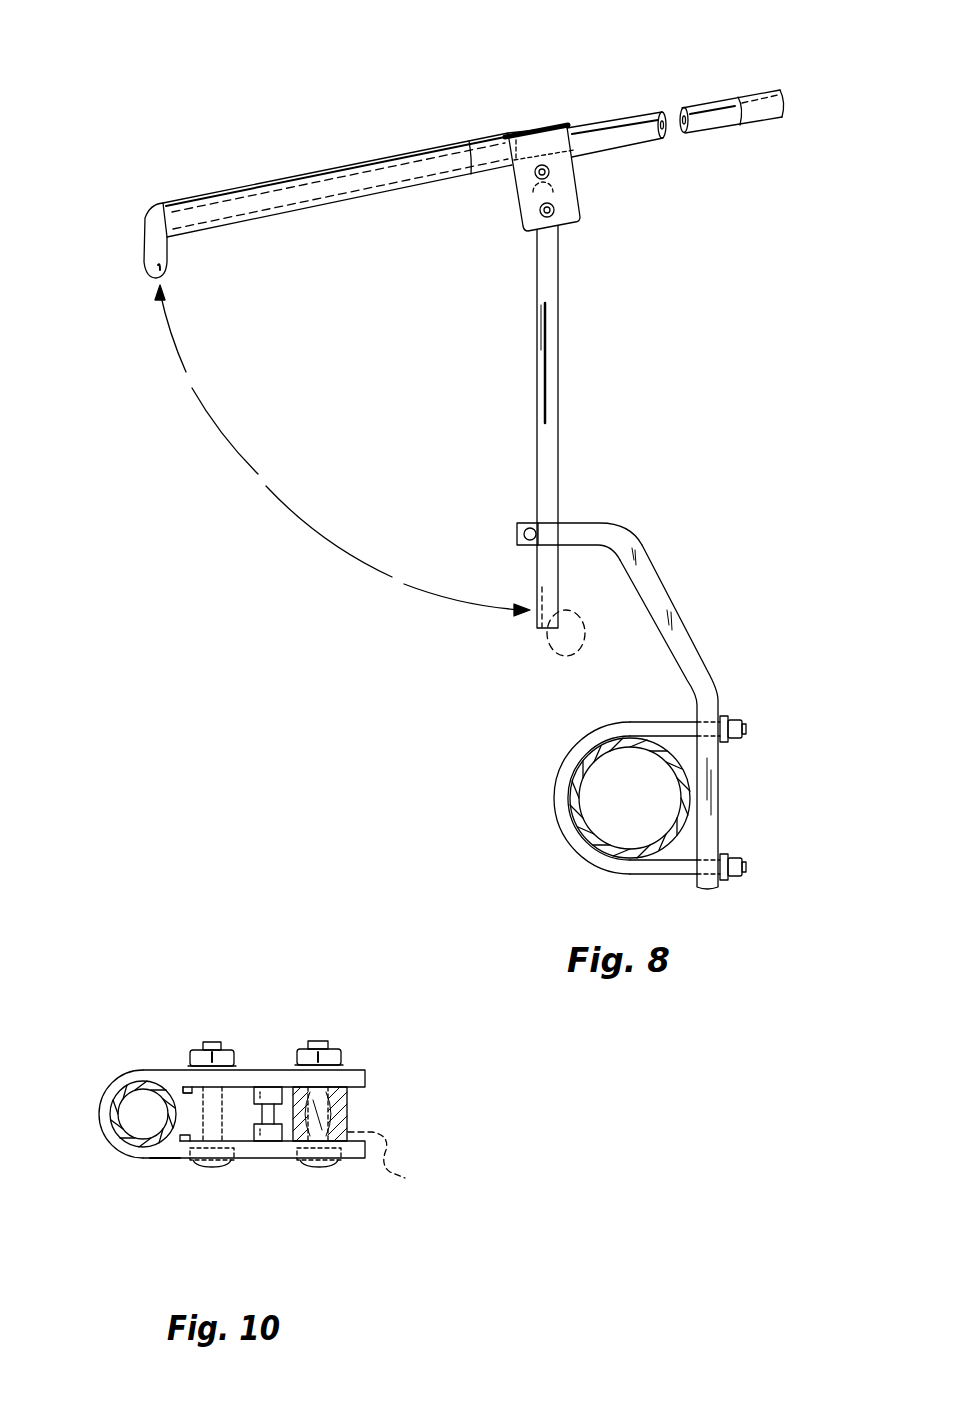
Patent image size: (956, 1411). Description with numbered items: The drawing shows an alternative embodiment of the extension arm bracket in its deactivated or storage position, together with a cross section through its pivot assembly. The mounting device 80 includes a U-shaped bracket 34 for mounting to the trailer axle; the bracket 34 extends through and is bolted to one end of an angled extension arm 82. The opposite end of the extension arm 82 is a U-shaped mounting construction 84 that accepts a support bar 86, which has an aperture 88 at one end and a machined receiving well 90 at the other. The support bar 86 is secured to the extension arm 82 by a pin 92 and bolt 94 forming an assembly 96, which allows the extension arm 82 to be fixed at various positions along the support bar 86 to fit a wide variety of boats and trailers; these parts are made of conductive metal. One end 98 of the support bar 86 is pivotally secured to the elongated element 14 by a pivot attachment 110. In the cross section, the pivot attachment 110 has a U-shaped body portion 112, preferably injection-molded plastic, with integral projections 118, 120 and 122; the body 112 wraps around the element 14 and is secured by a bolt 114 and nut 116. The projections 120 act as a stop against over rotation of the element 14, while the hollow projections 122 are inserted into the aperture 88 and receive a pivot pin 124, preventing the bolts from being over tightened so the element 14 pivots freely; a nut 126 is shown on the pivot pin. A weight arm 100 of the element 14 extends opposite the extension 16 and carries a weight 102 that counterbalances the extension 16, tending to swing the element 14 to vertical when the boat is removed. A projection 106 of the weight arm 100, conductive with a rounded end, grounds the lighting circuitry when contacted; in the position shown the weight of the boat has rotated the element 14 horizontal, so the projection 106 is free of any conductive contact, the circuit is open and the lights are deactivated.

In FIG. 8, the elongated element 14 is at (630, 110).
In FIG. 10, the elongated element 14 is at (102, 1142).
In FIG. 8, the extension 16 is at (727, 108).
In FIG. 8, the U-shaped bracket 34 is at (593, 860).
In FIG. 8, the mounting device 80 is at (758, 690).
In FIG. 8, the angled extension arm 82 is at (665, 595).
In FIG. 8, the U-shaped mounting construction 84 is at (550, 535).
In FIG. 8, the support bar 86 is at (550, 437).
In FIG. 10, the aperture 88 is at (395, 1165).
In FIG. 8, the machined receiving well 90 is at (574, 627).
In FIG. 8, the pin 92 is at (520, 528).
In FIG. 8, the bolt 94 is at (520, 545).
In FIG. 8, the pin and bolt assembly 96 is at (525, 510).
In FIG. 8, the end of support bar 98 is at (588, 182).
In FIG. 8, the weight arm 100 is at (537, 128).
In FIG. 8, the weight 102 is at (337, 170).
In FIG. 8, the projection 106 is at (150, 242).
In FIG. 8, the pivot attachment 110 is at (592, 216).
In FIG. 10, the pivot attachment 110 is at (146, 1058).
In FIG. 10, the U-shaped body portion 112 is at (180, 1150).
In FIG. 10, the bolt 114 is at (212, 1040).
In FIG. 10, the nut 116 is at (234, 1062).
In FIG. 10, the projection 118 is at (183, 1086).
In FIG. 10, the projection 120 is at (270, 1087).
In FIG. 10, the hollow projection 122 is at (348, 1095).
In FIG. 10, the pivot pin 124 is at (323, 1041).
In FIG. 10, the nut 126 is at (343, 1058).